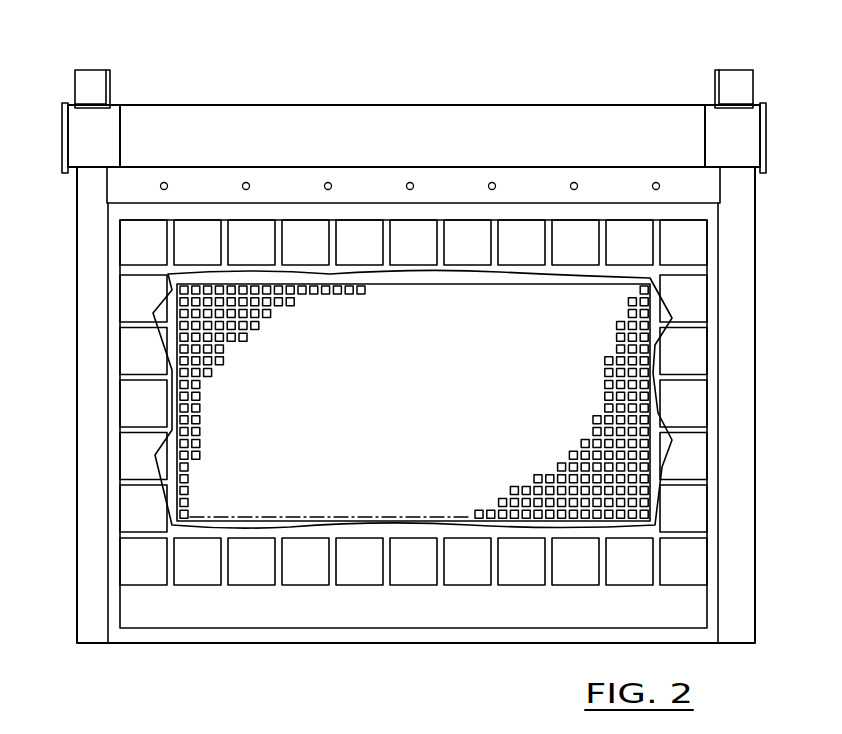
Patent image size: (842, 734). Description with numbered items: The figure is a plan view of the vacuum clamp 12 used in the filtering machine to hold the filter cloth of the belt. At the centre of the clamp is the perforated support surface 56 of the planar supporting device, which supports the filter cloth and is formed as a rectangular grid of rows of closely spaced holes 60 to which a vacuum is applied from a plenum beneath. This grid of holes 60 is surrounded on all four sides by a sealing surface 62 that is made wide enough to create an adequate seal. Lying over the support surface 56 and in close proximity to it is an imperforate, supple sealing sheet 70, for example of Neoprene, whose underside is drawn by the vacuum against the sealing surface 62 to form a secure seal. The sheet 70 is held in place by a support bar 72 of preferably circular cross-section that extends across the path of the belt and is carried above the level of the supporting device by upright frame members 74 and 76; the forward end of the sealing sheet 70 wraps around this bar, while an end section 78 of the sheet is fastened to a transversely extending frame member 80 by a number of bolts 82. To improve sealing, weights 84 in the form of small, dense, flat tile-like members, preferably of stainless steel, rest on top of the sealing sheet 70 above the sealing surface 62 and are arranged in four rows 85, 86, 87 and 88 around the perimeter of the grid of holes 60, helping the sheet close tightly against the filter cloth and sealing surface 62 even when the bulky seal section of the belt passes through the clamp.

The vacuum clamp 12 is at (385, 72).
The perforated support surface 56 is at (650, 393).
The holes 60 is at (647, 352).
The sealing surface 62 is at (660, 452).
The imperforate sealing sheet 70 is at (718, 213).
The support bar 72 is at (766, 157).
The upright frame member 74 is at (105, 186).
The upright frame member 76 is at (105, 80).
The end section of the sealing sheet 78 is at (533, 183).
The transversely extending frame member 80 is at (107, 205).
The bolts 82 is at (247, 181).
The weights 84 is at (690, 570).
The row of weights 85 is at (466, 572).
The row of weights 86 is at (130, 393).
The row of weights 87 is at (398, 232).
The row of weights 88 is at (697, 288).